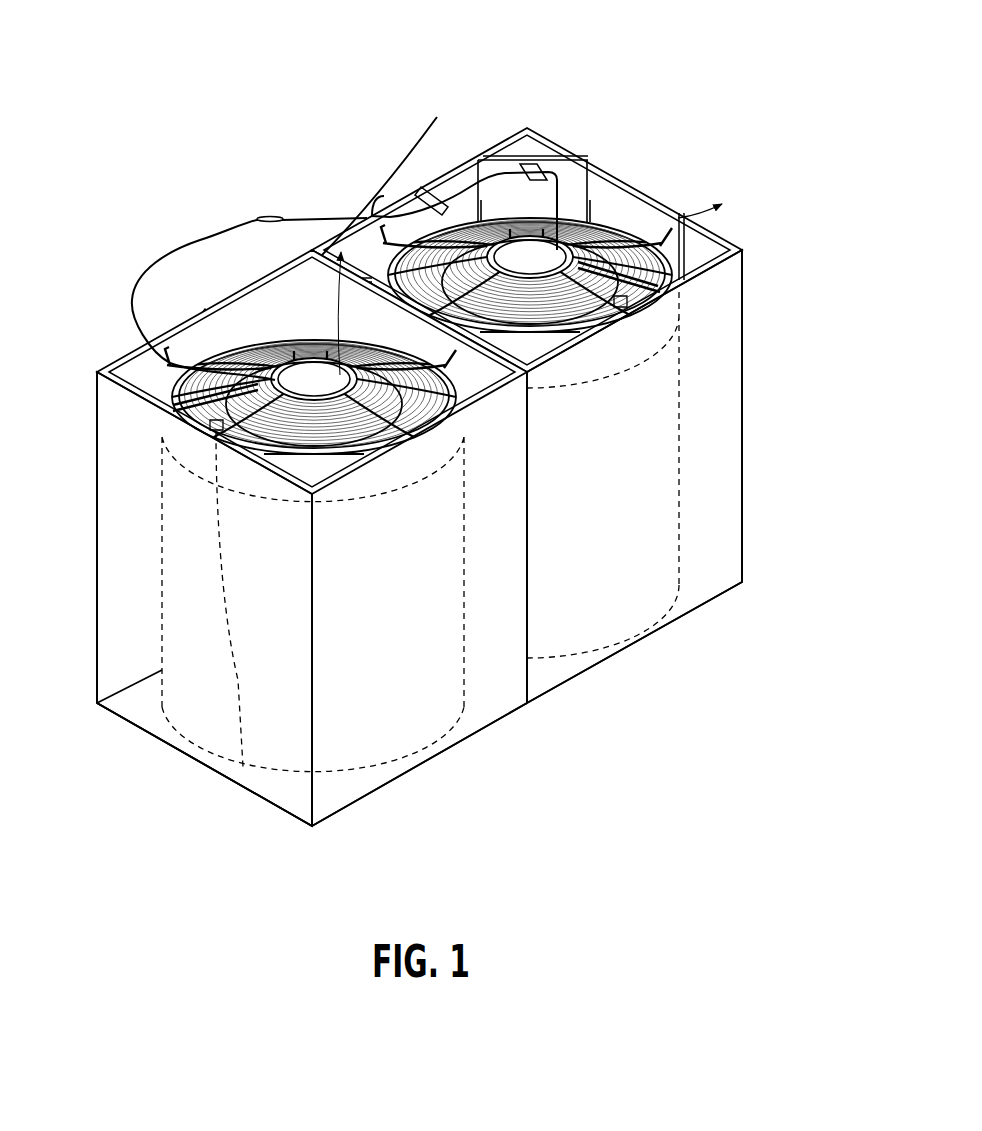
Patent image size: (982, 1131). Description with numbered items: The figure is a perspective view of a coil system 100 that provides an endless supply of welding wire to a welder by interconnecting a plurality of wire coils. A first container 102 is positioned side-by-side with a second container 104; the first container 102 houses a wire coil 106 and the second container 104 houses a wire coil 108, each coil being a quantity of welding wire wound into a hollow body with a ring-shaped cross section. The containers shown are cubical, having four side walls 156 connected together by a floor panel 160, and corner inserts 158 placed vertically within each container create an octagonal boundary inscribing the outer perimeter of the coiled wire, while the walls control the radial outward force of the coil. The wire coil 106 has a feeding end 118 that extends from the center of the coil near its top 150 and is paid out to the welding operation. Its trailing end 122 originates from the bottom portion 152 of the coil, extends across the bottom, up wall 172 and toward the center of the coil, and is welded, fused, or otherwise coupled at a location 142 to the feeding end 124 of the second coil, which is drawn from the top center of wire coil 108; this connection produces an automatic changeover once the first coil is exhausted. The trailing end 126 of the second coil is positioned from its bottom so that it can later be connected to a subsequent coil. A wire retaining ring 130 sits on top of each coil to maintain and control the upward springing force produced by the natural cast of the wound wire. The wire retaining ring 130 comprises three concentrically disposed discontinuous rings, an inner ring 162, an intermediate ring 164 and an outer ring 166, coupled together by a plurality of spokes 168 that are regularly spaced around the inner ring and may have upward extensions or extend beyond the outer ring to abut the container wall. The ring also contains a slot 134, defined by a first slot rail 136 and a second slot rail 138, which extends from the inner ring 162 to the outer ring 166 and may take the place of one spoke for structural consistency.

The coil system 100 is at (115, 88).
The first container 102 is at (94, 632).
The second container 104 is at (746, 470).
The wire coil 106 is at (227, 690).
The wire coil 108 is at (633, 577).
The feeding end 118 is at (347, 280).
The trailing end 122 is at (132, 297).
The feeding end 124 is at (565, 185).
The trailing end 126 is at (681, 213).
The wire retaining ring 130 is at (604, 208).
The slot 134 is at (630, 304).
The first slot rail 136 is at (657, 282).
The second slot rail 138 is at (648, 296).
The location 142 is at (266, 214).
The top 150 is at (435, 390).
The bottom portion 152 is at (362, 772).
The side walls 156 is at (494, 670).
The corner inserts 158 is at (517, 160).
The floor panel 160 is at (147, 712).
The inner ring 162 is at (432, 395).
The intermediate ring 164 is at (357, 383).
The outer ring 166 is at (460, 412).
The spokes 168 is at (350, 398).
The wall 172 is at (127, 603).